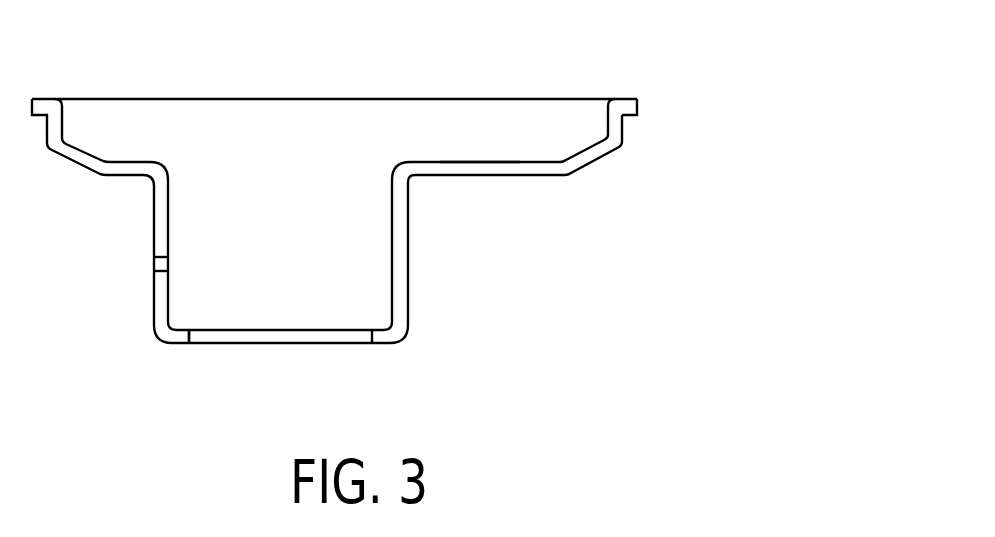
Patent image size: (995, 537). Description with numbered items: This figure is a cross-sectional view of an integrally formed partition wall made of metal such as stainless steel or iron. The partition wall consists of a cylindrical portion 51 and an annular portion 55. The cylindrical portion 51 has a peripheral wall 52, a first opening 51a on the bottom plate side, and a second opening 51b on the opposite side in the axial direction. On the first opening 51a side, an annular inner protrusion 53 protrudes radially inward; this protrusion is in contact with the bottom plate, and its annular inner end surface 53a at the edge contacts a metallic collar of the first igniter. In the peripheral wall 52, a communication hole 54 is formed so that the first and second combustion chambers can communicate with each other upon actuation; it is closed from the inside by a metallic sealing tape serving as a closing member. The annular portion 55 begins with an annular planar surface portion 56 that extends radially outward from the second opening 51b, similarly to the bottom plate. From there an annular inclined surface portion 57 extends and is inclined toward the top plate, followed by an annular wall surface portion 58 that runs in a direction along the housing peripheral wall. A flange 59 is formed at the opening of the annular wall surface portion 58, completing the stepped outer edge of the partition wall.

The cylindrical portion 51 is at (408, 280).
The first opening 51a is at (315, 345).
The second opening 51b is at (392, 181).
The peripheral wall 52 is at (153, 212).
The annular inner protrusion 53 is at (177, 346).
The annular inner end surface 53a is at (193, 337).
The communication hole 54 is at (153, 265).
The annular portion 55 is at (488, 177).
The annular planar surface portion 56 is at (482, 160).
The annular inclined surface portion 57 is at (588, 148).
The annular wall surface portion 58 is at (622, 130).
The flange 59 is at (627, 108).